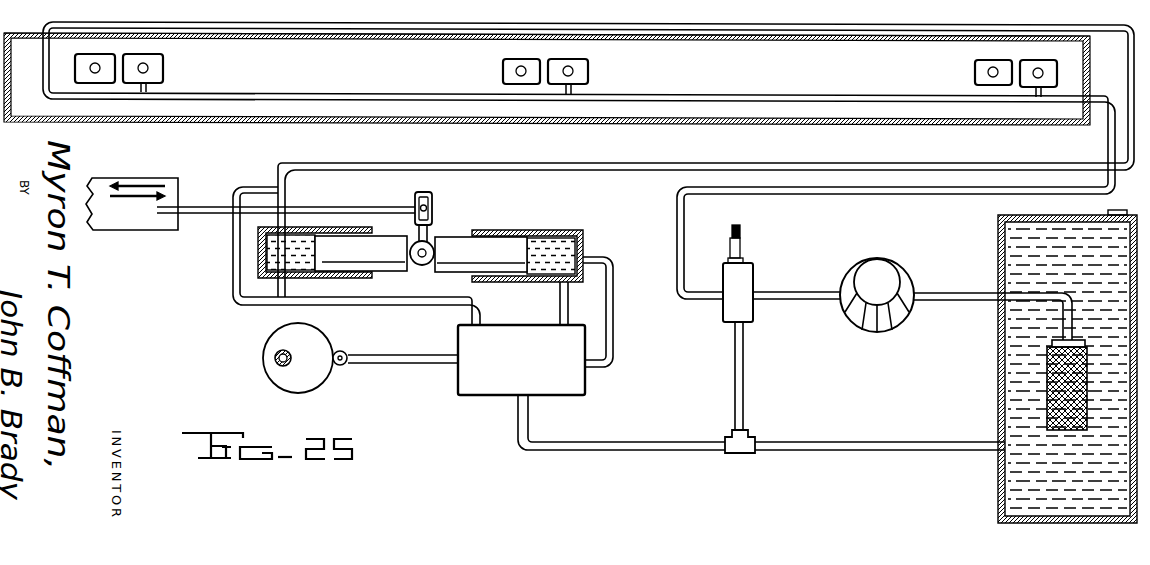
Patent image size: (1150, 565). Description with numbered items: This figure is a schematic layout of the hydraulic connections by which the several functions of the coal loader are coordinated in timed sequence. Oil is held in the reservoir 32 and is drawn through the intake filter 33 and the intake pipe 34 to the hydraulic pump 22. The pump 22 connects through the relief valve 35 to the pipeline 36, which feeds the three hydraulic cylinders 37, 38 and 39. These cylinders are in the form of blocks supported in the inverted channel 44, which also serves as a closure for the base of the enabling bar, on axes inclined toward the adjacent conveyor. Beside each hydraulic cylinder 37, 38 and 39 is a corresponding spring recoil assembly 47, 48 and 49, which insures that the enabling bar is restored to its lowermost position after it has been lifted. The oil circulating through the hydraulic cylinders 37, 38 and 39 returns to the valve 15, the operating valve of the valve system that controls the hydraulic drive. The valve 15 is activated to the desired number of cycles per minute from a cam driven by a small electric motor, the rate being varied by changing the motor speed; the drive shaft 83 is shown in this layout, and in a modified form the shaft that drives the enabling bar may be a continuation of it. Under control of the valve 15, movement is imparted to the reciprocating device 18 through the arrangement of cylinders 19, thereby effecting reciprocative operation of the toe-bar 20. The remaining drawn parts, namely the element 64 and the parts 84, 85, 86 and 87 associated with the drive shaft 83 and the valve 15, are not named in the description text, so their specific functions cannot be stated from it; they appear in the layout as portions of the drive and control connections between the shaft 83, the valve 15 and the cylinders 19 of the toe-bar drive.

The valve system 15 is at (260, 247).
The reciprocating device 18 is at (466, 216).
The cylinders 19 is at (343, 240).
The toe-bar 20 is at (113, 216).
The hydraulic pump 22 is at (876, 277).
The reservoir for oil 32 is at (991, 388).
The intake filter 33 is at (1047, 403).
The intake pipe 34 is at (977, 297).
The relief valve 35 is at (738, 282).
The pipeline 36 is at (815, 98).
The hydraulic cylinder 37 is at (160, 68).
The hydraulic cylinder 38 is at (589, 68).
The hydraulic cylinder 39 is at (1052, 78).
The inverted channel 44 is at (713, 78).
The spring recoil assembly 47 is at (90, 53).
The spring recoil assembly 48 is at (503, 62).
The spring recoil assembly 49 is at (988, 60).
The housing wall 64 is at (547, 18).
The drive shaft 83 is at (281, 366).
The disc 84 is at (305, 382).
The connecting rod 85 is at (407, 364).
The pivot pin 86 is at (346, 353).
The control valve box 87 is at (500, 383).